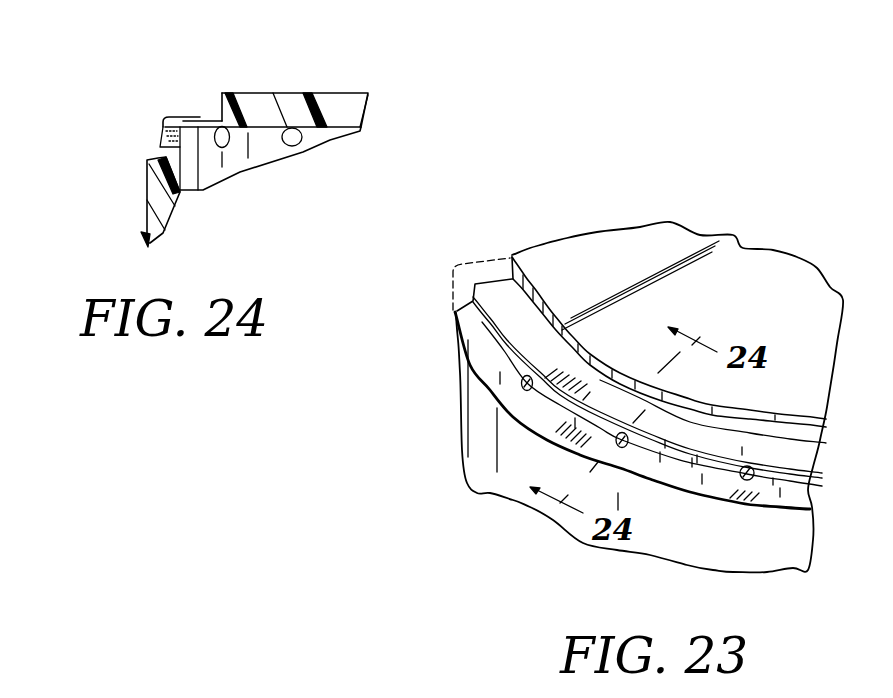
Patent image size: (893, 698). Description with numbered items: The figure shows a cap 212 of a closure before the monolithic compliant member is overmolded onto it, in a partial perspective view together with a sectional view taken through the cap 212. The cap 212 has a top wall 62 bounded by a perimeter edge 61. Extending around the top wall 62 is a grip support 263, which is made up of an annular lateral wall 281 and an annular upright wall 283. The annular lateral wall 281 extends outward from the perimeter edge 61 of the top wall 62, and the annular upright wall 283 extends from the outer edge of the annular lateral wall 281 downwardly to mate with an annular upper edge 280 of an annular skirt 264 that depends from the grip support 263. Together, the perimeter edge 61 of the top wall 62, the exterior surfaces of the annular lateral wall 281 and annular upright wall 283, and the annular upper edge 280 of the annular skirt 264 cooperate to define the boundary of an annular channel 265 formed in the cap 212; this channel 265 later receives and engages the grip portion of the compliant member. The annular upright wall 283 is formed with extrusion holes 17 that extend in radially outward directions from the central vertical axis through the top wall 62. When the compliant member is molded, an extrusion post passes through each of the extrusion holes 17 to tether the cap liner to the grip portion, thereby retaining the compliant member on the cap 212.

In FIG. 24, the extrusion holes 17 is at (164, 133).
In FIG. 23, the extrusion holes 17 is at (522, 388).
In FIG. 24, the perimeter edge 61 is at (216, 112).
In FIG. 23, the perimeter edge 61 is at (607, 366).
In FIG. 24, the top wall 62 is at (293, 103).
In FIG. 23, the top wall 62 is at (640, 242).
In FIG. 24, the cap 212 is at (358, 92).
In FIG. 24, the grip support 263 is at (160, 104).
In FIG. 23, the grip support 263 is at (455, 252).
In FIG. 24, the annular skirt 264 is at (140, 236).
In FIG. 23, the annular skirt 264 is at (486, 469).
In FIG. 23, the annular channel 265 is at (488, 270).
In FIG. 24, the annular upper edge 280 is at (153, 175).
In FIG. 23, the annular upper edge 280 is at (527, 411).
In FIG. 24, the annular lateral wall 281 is at (188, 117).
In FIG. 23, the annular lateral wall 281 is at (750, 440).
In FIG. 24, the annular upright wall 283 is at (160, 148).